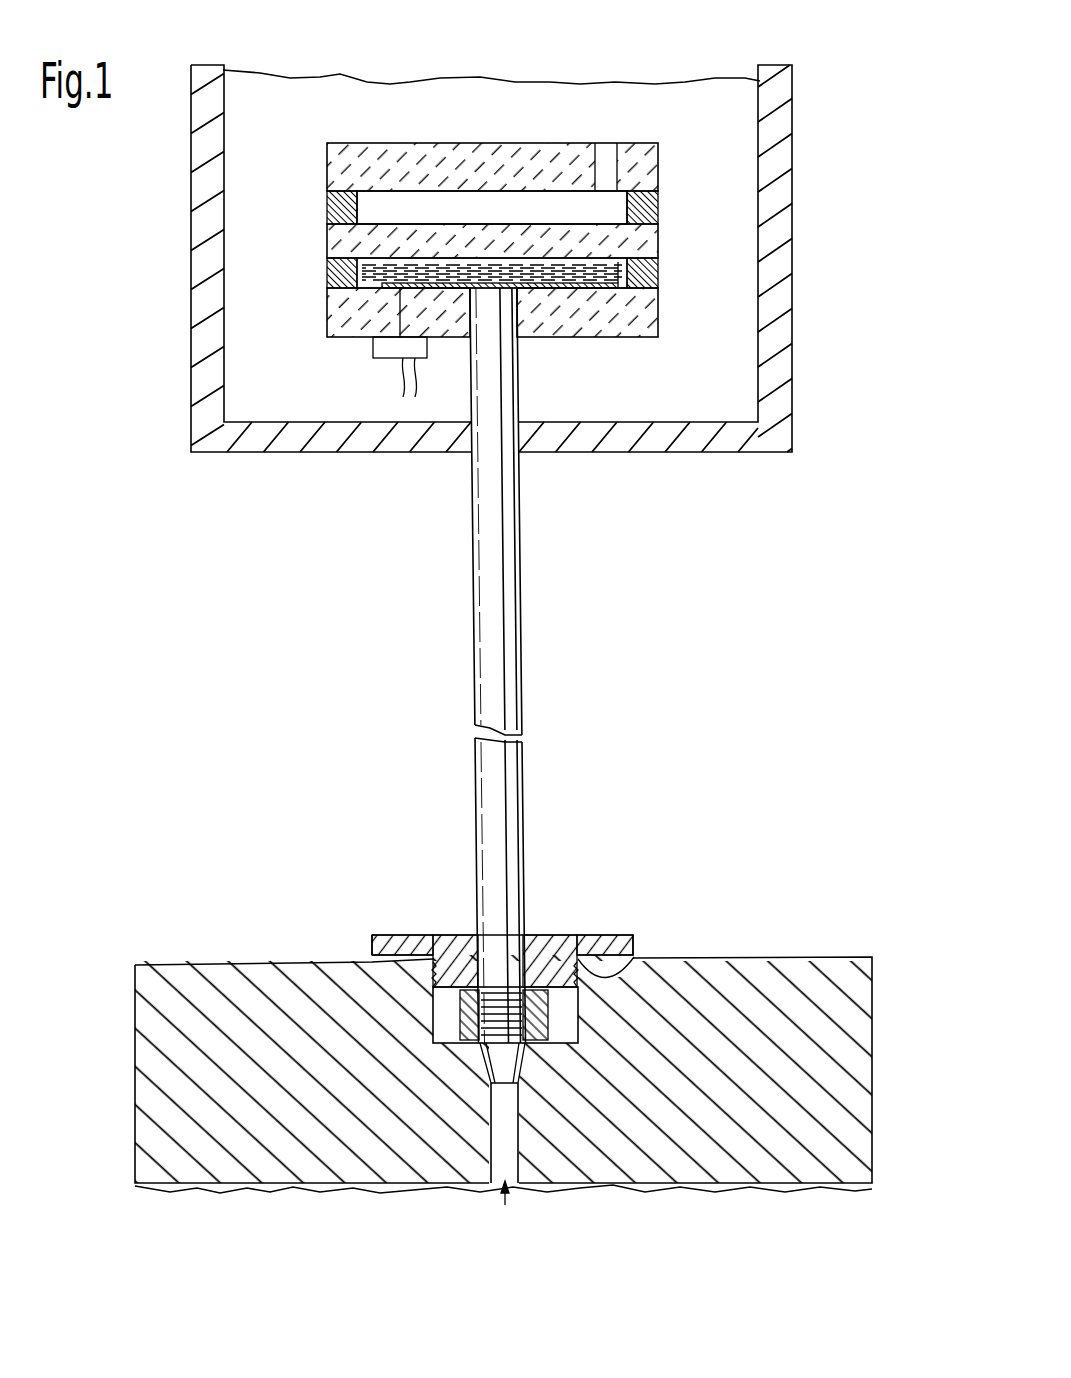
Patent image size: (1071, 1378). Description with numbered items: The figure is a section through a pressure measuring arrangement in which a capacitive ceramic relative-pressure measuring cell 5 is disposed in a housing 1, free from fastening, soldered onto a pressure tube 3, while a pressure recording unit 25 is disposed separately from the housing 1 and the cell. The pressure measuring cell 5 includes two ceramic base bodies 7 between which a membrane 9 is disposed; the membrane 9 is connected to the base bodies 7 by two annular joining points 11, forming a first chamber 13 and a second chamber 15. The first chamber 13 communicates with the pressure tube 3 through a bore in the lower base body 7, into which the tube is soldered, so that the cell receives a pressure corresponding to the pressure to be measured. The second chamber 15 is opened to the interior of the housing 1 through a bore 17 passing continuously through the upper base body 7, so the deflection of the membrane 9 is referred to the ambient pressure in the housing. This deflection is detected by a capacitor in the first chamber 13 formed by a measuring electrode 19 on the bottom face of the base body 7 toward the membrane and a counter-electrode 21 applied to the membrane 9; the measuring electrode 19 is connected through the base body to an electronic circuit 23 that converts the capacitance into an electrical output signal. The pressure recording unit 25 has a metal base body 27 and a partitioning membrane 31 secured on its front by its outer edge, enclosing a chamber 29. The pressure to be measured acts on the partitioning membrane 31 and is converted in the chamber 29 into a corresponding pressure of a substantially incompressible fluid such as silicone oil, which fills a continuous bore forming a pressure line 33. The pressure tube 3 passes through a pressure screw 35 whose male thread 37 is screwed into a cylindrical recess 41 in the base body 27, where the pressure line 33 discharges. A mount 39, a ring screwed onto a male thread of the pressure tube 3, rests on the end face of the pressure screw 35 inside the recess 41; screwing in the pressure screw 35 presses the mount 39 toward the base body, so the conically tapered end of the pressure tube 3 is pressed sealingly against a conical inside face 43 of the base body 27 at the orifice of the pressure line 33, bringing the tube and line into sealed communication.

The housing 1 is at (198, 272).
The pressure tube 3 is at (508, 591).
The pressure measuring cell 5 is at (361, 79).
The ceramic base body 7 is at (327, 163).
The membrane 9 is at (327, 245).
The annular joining point 11 is at (327, 208).
The first chamber 13 is at (513, 272).
The second chamber 15 is at (526, 205).
The bore 17 is at (601, 150).
The measuring electrode 19 is at (585, 281).
The counter-electrode 21 is at (625, 265).
The electronic circuit 23 is at (380, 352).
The pressure recording unit 25 is at (742, 916).
The base body 27 is at (190, 988).
The chamber 29 is at (505, 1205).
The partitioning membrane 31 is at (240, 1192).
The pressure line 33 is at (524, 1157).
The pressure screw 35 is at (430, 935).
The thread 37 is at (640, 958).
The mount 39 is at (462, 1022).
The cylindrical recess 41 is at (563, 1007).
The conical inside face 43 is at (480, 1065).